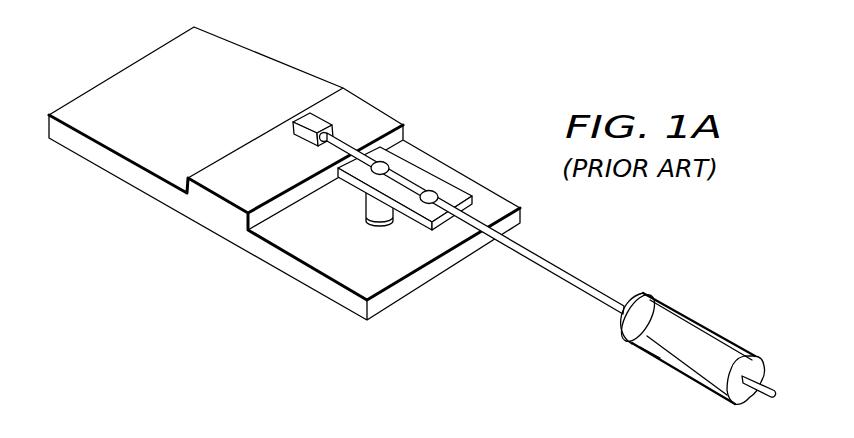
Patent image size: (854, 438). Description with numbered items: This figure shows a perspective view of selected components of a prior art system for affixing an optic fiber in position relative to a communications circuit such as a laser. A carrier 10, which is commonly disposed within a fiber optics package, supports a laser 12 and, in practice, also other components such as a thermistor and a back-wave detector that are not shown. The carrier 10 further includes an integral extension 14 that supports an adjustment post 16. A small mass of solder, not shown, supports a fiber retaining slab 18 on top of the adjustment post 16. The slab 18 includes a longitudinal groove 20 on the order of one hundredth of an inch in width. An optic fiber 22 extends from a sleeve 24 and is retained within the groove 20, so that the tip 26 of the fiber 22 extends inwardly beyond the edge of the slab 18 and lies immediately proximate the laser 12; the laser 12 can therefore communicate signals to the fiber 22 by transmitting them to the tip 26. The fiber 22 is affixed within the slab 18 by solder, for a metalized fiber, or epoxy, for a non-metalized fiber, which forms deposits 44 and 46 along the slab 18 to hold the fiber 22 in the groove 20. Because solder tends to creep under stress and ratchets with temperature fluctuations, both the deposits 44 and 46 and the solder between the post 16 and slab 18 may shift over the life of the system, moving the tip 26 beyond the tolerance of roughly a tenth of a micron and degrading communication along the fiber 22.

The carrier 10 is at (412, 215).
The laser 12 is at (310, 121).
The integral extension 14 is at (332, 288).
The adjustment post 16 is at (372, 201).
The fiber retaining slab 18 is at (412, 173).
The longitudinal groove 20 is at (453, 190).
The optic fiber 22 is at (568, 274).
The sleeve 24 is at (703, 327).
The tip 26 is at (337, 135).
The deposit 44 is at (420, 204).
The deposit 46 is at (372, 175).